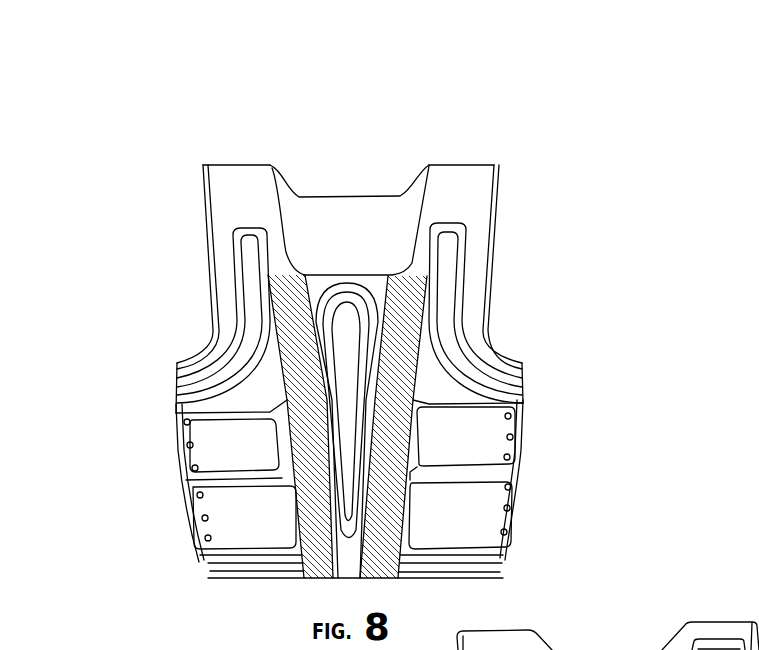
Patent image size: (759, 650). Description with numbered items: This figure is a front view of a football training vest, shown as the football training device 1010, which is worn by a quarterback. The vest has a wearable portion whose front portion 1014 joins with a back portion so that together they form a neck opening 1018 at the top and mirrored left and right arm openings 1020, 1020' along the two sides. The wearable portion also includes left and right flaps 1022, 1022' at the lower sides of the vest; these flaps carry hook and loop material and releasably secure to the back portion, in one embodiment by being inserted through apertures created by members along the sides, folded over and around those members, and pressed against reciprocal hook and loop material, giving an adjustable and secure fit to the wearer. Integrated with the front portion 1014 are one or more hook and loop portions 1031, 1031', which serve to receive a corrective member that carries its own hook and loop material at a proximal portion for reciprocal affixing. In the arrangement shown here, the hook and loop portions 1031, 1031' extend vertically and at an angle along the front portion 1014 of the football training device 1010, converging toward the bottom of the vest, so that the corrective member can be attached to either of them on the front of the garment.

The football training device 1010 is at (566, 190).
The front portion 1014 is at (243, 220).
The neck opening 1018 is at (335, 217).
The left arm opening 1020 is at (582, 267).
The right arm opening 1020' is at (146, 267).
The left flap 1022 is at (546, 486).
The right flap 1022' is at (169, 485).
The hook and loop portion 1031 is at (516, 427).
The hook and loop portion 1031' is at (200, 426).